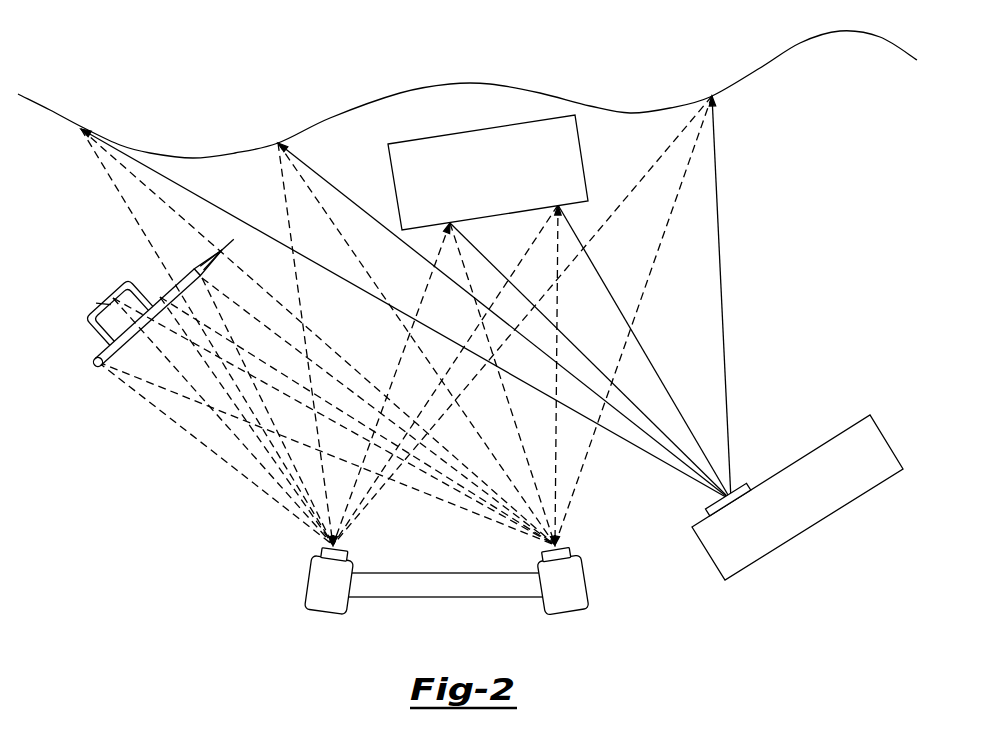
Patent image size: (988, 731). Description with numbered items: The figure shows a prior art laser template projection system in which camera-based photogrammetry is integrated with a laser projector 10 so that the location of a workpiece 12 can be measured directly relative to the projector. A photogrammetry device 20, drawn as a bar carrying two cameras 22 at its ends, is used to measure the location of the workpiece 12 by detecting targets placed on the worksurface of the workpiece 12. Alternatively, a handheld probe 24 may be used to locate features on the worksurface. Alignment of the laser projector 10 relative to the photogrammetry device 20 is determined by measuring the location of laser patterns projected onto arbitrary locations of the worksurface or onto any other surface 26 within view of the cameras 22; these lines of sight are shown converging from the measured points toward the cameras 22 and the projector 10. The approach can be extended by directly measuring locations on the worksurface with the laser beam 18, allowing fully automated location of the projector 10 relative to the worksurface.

The laser projector 10 is at (784, 507).
The workpiece 12 is at (476, 188).
The laser beam 18 is at (722, 292).
The photogrammetry device 20 is at (388, 614).
The cameras 22 is at (312, 600).
The handheld probe 24 is at (160, 297).
The surface 26 is at (734, 82).